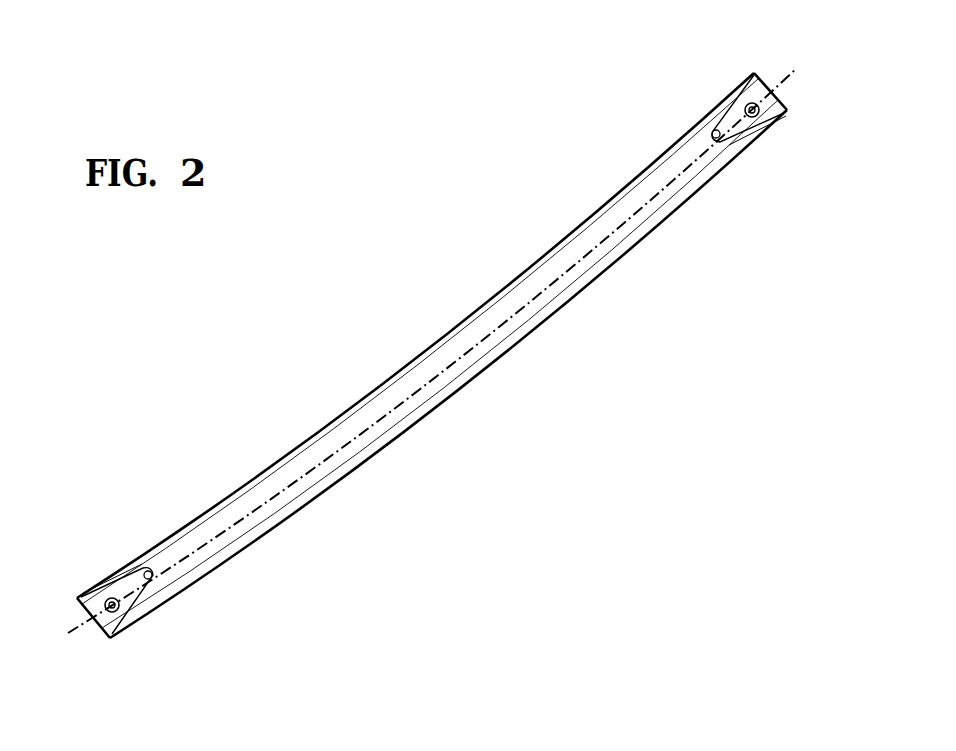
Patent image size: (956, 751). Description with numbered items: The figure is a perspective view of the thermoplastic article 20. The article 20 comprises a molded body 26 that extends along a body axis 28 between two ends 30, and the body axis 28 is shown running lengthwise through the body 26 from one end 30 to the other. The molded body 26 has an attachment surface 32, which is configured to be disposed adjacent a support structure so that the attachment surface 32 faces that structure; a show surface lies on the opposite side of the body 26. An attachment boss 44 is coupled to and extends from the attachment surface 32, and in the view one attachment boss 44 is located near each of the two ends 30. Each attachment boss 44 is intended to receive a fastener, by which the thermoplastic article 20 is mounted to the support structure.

The thermoplastic article 20 is at (532, 374).
The molded body 26 is at (462, 338).
The body axis 28 is at (797, 72).
The ends 30 is at (791, 117).
The attachment surface 32 is at (382, 434).
The attachment boss 44 is at (745, 92).